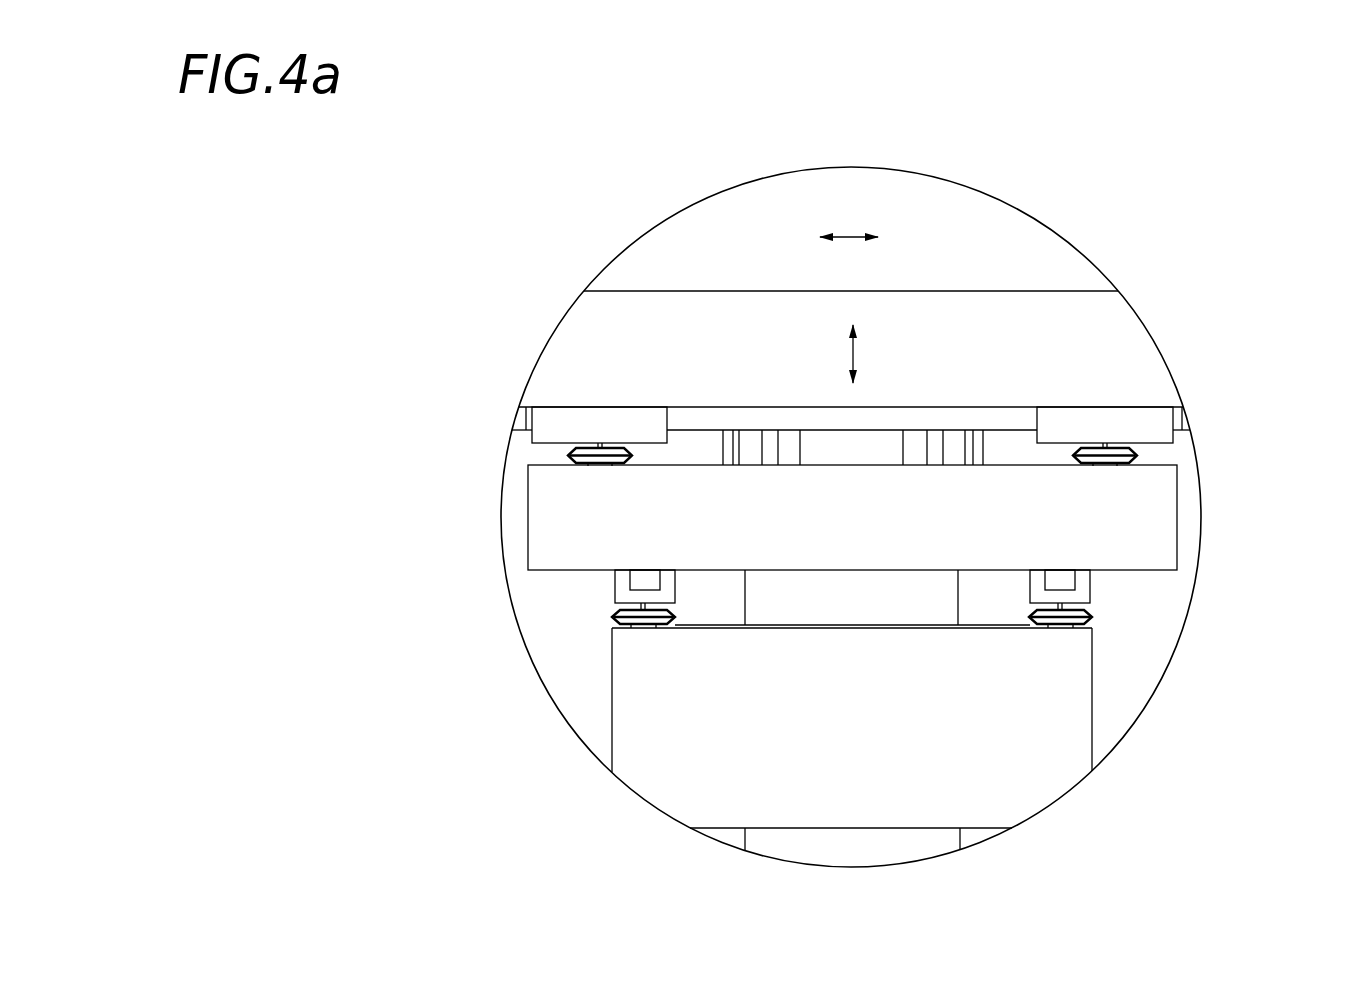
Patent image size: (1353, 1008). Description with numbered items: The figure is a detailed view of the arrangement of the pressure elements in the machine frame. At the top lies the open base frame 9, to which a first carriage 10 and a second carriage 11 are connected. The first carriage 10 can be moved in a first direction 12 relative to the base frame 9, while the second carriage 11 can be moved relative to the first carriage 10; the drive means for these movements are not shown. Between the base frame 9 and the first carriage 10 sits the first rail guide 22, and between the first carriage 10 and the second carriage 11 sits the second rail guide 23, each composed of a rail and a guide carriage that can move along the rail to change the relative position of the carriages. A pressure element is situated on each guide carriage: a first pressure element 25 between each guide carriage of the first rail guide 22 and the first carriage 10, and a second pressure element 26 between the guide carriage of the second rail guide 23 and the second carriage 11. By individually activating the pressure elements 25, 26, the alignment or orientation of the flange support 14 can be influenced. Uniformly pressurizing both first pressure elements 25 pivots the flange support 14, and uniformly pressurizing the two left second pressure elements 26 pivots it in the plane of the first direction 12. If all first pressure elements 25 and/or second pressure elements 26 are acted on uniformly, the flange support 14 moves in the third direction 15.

The base frame 9 is at (1107, 335).
The first carriage 10 is at (1072, 525).
The second carriage 11 is at (1063, 700).
The first direction 12 is at (847, 236).
The flange support 14 is at (936, 437).
The third direction 15 is at (849, 353).
The first rail guide 22 is at (1147, 420).
The second rail guide 23 is at (601, 585).
The first pressure element 25 is at (557, 452).
The second pressure element 26 is at (601, 622).